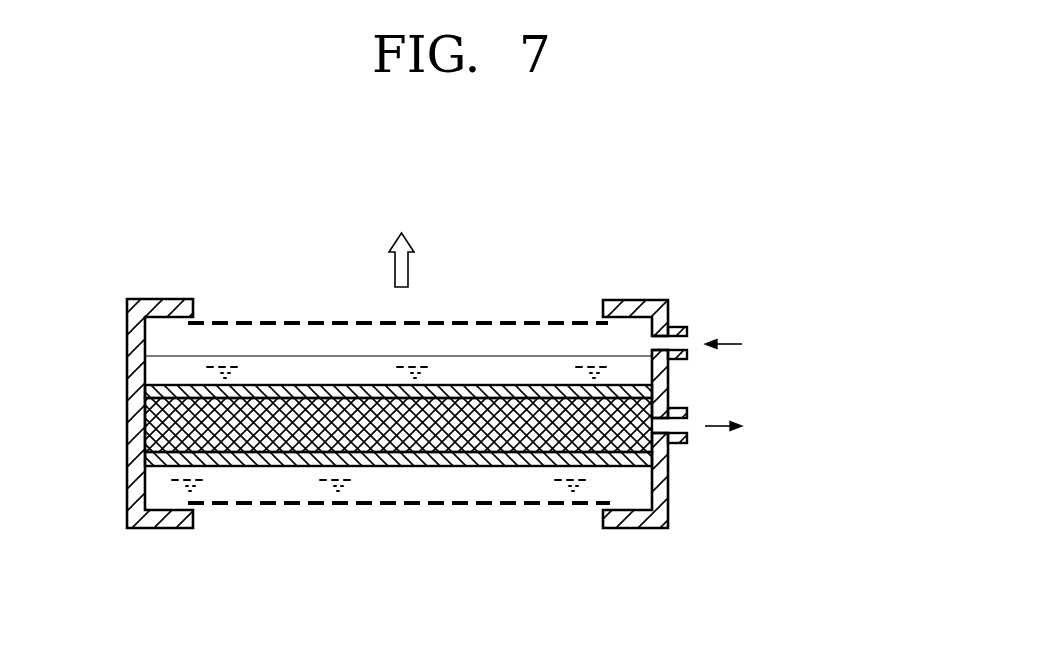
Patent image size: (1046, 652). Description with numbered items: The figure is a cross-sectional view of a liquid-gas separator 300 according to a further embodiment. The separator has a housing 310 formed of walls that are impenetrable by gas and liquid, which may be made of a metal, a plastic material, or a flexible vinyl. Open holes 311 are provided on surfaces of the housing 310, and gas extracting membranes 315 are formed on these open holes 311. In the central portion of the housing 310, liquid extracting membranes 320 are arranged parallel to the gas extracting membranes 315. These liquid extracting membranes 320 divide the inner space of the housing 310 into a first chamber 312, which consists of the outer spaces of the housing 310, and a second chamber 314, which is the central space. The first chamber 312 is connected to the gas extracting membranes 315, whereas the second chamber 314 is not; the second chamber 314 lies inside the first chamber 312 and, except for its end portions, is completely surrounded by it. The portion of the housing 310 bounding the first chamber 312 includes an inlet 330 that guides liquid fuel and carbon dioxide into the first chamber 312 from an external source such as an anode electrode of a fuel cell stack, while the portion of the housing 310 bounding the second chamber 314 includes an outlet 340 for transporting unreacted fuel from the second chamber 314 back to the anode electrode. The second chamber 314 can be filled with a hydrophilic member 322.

The liquid-gas separator 300 is at (638, 250).
The housing 310 is at (147, 387).
The open holes 311 is at (605, 310).
The first chamber 312 is at (177, 342).
The second chamber 314 is at (150, 426).
The gas extracting membranes 315 is at (263, 322).
The liquid extracting membranes 320 is at (147, 457).
The hydrophilic member 322 is at (365, 438).
The inlet 330 is at (686, 327).
The liquid outlet 340 is at (683, 444).